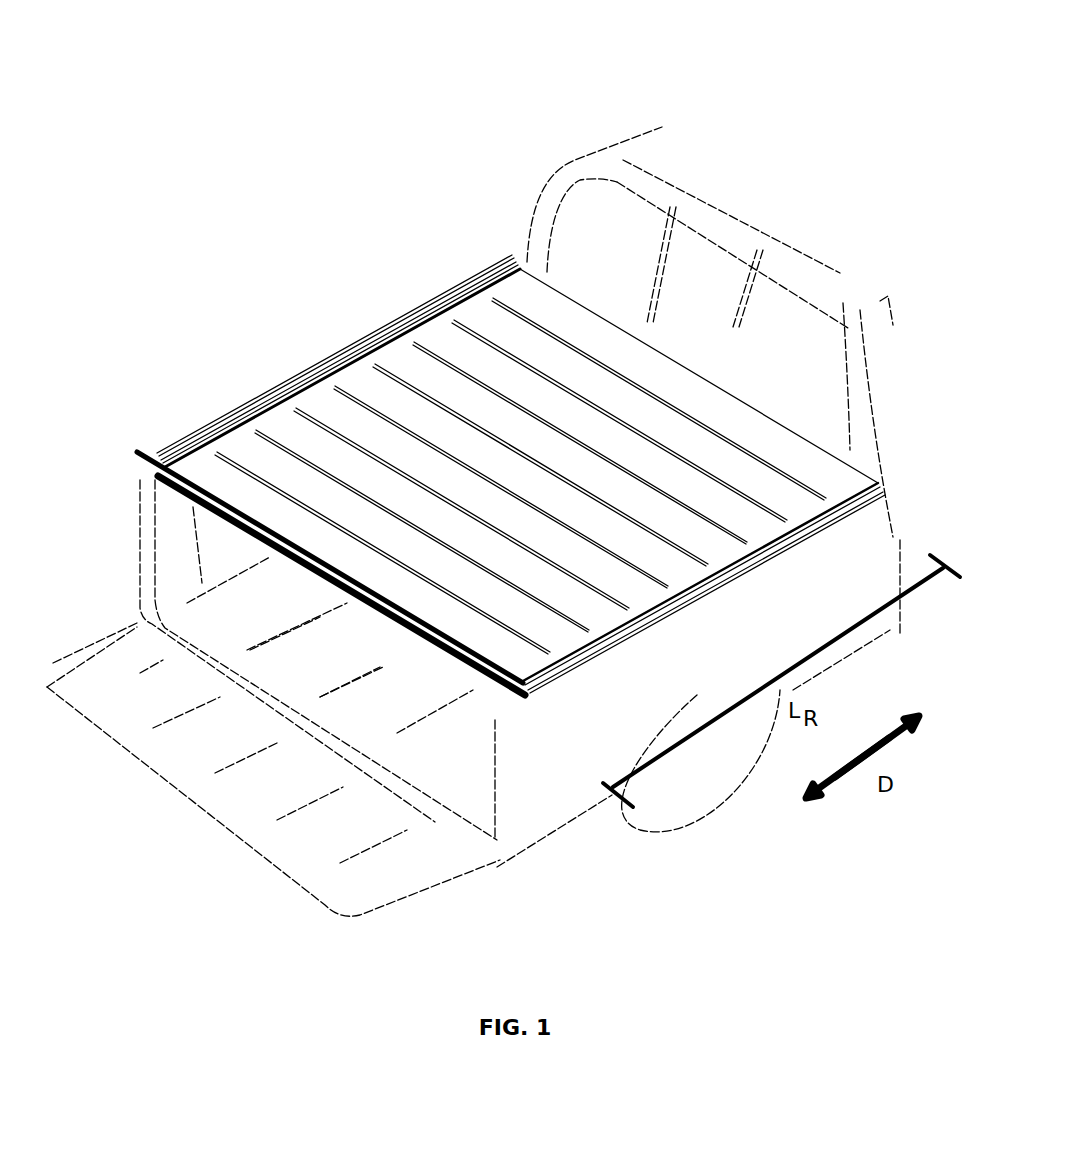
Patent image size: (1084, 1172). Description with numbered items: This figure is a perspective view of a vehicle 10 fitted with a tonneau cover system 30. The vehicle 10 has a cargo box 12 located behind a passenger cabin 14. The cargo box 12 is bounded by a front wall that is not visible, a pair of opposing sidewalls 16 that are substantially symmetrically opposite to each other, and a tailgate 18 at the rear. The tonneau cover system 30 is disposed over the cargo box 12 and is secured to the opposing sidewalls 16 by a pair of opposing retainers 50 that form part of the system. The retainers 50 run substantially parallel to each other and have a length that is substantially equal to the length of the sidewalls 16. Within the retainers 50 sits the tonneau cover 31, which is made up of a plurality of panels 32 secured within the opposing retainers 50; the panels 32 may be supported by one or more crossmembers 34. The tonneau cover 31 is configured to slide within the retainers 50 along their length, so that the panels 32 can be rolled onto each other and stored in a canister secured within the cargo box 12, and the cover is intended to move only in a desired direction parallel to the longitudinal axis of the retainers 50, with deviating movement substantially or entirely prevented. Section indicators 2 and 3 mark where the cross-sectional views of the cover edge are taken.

The vehicle 10 is at (568, 76).
The cargo box 12 is at (430, 750).
The passenger cabin 14 is at (788, 317).
The sidewalls 16 is at (137, 570).
The tailgate 18 is at (313, 847).
The tonneau cover system 30 is at (527, 453).
The tonneau cover 31 is at (820, 469).
The panels 32 is at (252, 456).
The crossmembers 34 is at (600, 360).
The retainers 50 is at (388, 337).
The section line 2- 2 is at (146, 474).
The section line 3- 3 is at (403, 629).